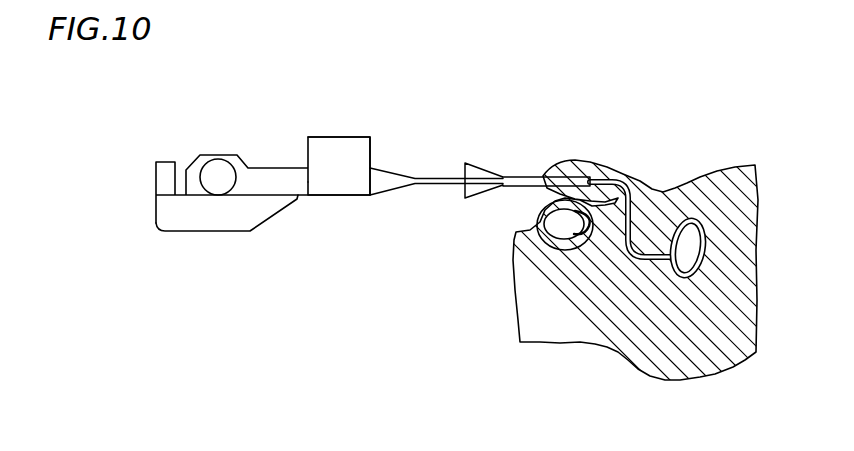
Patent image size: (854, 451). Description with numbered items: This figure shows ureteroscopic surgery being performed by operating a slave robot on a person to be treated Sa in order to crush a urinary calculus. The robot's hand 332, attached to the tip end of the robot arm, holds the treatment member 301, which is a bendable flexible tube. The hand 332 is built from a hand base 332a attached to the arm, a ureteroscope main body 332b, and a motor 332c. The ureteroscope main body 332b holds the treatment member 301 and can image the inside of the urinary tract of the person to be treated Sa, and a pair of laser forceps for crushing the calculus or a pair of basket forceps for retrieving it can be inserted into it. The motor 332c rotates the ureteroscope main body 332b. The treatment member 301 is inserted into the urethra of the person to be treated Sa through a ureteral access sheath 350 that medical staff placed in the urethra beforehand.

The hand 332 is at (293, 131).
The hand base 332a is at (202, 210).
The ureteroscope main body 332b is at (328, 179).
The motor 332c is at (210, 157).
The treatment member 301 is at (440, 187).
The ureteral access sheath 350 is at (532, 174).
The person to be treated Sa is at (709, 183).